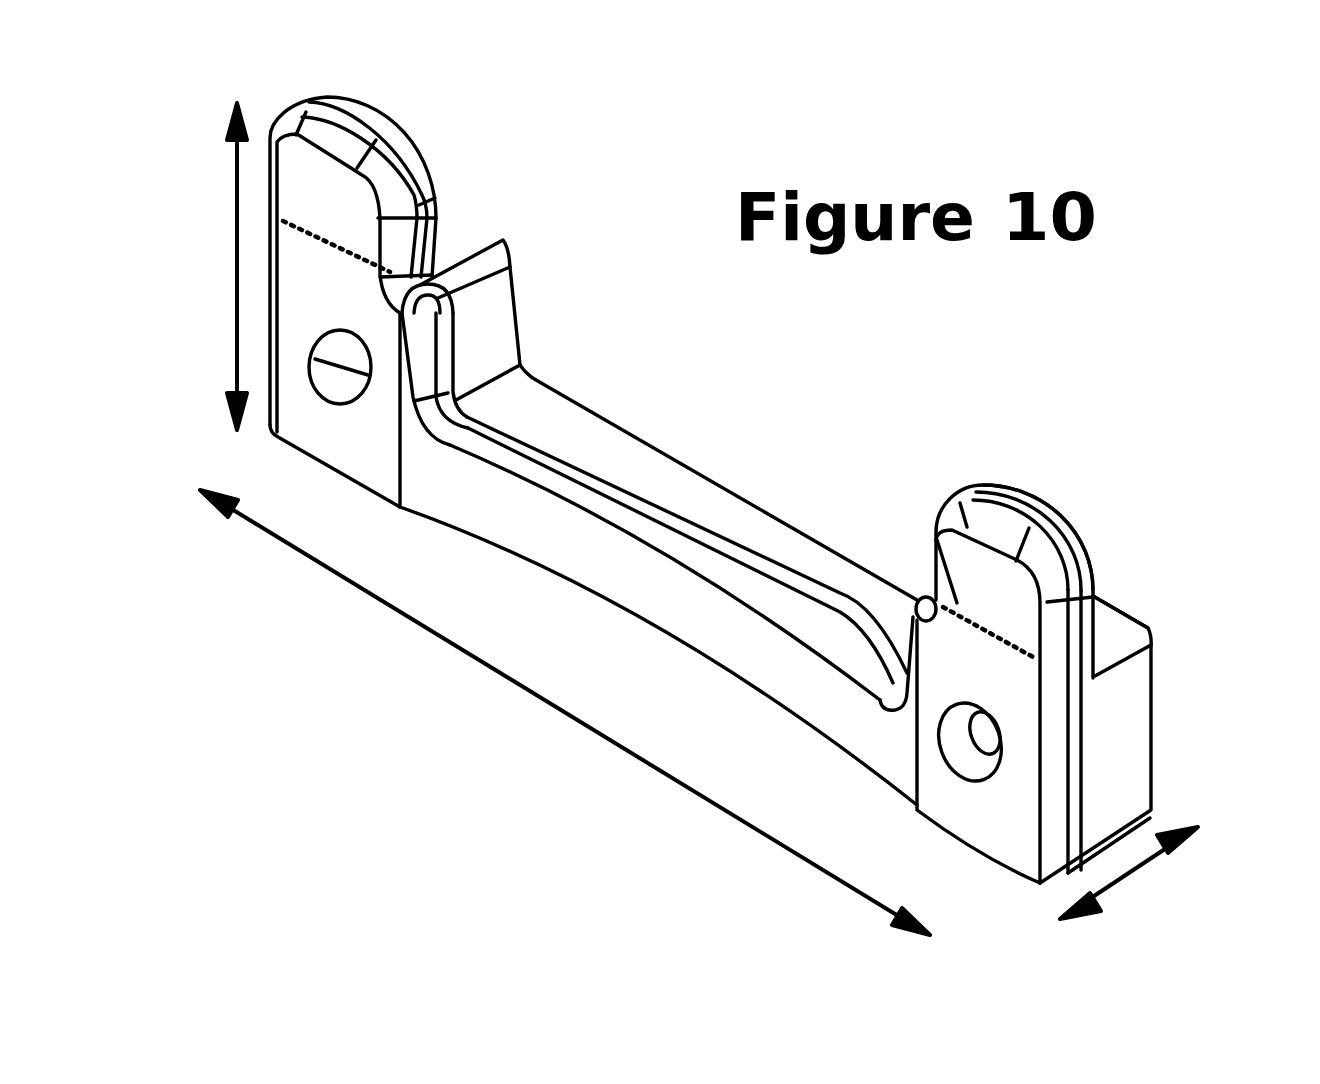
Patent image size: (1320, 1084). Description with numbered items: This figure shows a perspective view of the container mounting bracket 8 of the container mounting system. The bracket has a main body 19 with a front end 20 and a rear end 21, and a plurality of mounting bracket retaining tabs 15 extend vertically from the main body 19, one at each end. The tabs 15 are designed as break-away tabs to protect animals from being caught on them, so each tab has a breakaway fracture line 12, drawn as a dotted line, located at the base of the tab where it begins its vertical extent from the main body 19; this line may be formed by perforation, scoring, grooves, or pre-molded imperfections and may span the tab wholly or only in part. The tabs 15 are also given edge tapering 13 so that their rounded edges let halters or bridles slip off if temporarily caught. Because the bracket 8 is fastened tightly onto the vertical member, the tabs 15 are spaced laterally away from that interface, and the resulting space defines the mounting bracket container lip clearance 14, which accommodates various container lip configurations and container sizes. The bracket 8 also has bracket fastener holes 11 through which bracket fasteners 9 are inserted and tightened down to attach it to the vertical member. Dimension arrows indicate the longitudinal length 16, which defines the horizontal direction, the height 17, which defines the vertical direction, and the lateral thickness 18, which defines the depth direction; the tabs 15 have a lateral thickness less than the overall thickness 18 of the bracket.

The container mounting bracket 8 is at (1110, 757).
The bracket fasteners 9 is at (346, 377).
The bracket fastener holes 11 is at (980, 733).
The breakaway fracture line 12 is at (446, 255).
The edge tapering 13 is at (1087, 553).
The mounting bracket container lip clearance 14 is at (447, 217).
The mounting bracket retaining tabs 15 is at (360, 128).
The longitudinal length 16 is at (565, 712).
The height 17 is at (189, 266).
The lateral thickness 18 is at (1129, 892).
The main body 19 is at (605, 561).
The front end 20 is at (720, 632).
The rear end 21 is at (725, 485).